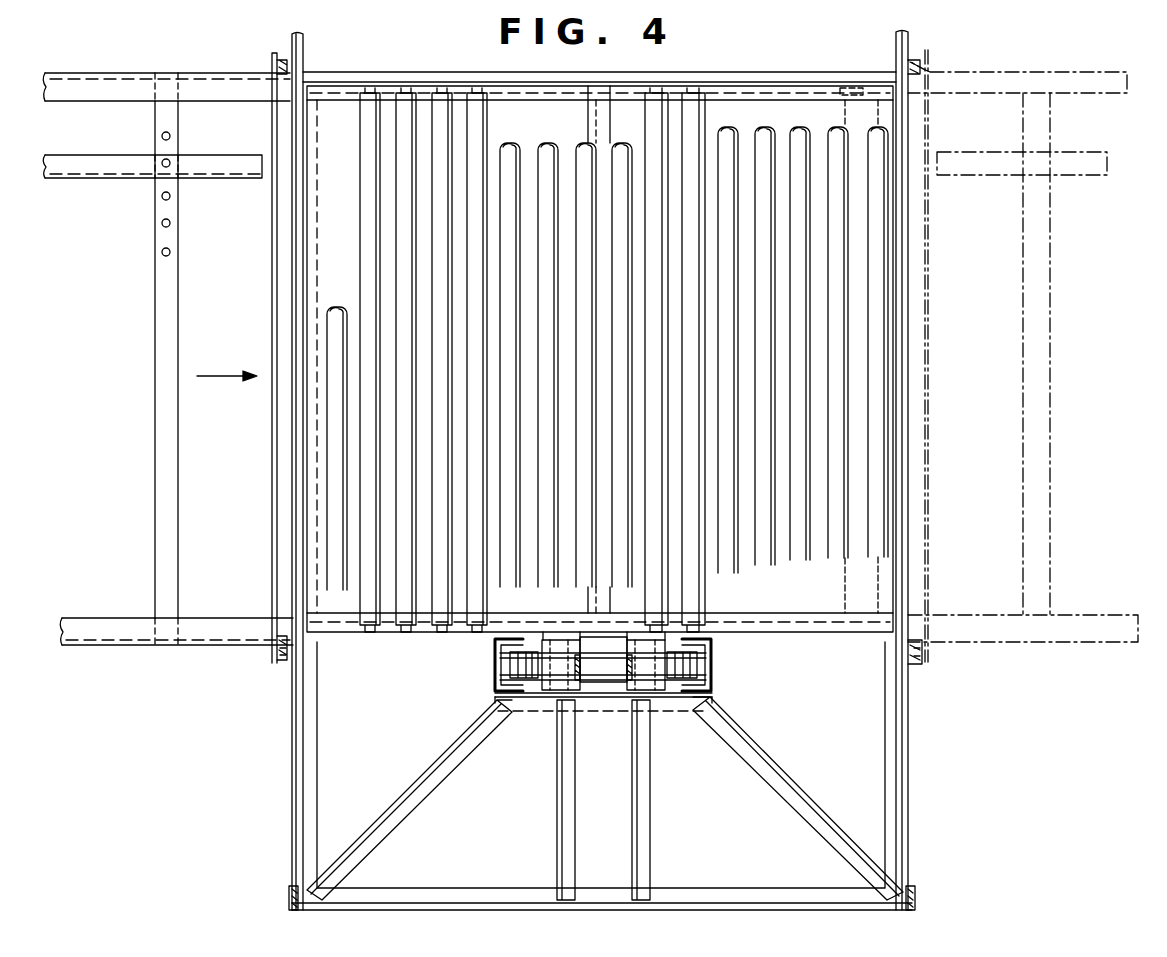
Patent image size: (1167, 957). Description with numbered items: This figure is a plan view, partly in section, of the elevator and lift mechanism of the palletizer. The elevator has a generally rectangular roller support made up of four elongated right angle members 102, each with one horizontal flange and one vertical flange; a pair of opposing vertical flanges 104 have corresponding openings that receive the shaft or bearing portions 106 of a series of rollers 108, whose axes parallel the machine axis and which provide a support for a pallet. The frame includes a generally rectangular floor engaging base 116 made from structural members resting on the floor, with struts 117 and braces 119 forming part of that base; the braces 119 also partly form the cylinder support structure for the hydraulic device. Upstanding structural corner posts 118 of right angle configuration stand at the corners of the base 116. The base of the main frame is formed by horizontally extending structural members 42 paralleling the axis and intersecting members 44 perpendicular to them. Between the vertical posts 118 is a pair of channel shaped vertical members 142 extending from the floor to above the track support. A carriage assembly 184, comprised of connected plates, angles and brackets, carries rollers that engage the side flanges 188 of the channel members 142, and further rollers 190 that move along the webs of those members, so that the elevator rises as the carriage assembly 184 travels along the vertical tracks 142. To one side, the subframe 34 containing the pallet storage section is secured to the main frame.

The subframe 34 is at (150, 585).
The horizontally extending structural members 42 is at (306, 53).
The horizontally extending structural members 44 is at (474, 74).
The elongated right angle members 102 is at (514, 96).
The vertical flanges 104 is at (630, 76).
The shaft or bearing portions 106 is at (662, 88).
The rollers 108 is at (793, 127).
The floor engaging base 116 is at (296, 770).
The struts 117 is at (397, 818).
The corner posts 118 is at (292, 662).
The braces 119 is at (573, 815).
The channel shaped vertical members 142 is at (721, 676).
The carriage assembly 184 is at (608, 685).
The side flanges 188 is at (497, 661).
The rollers 190 is at (502, 667).